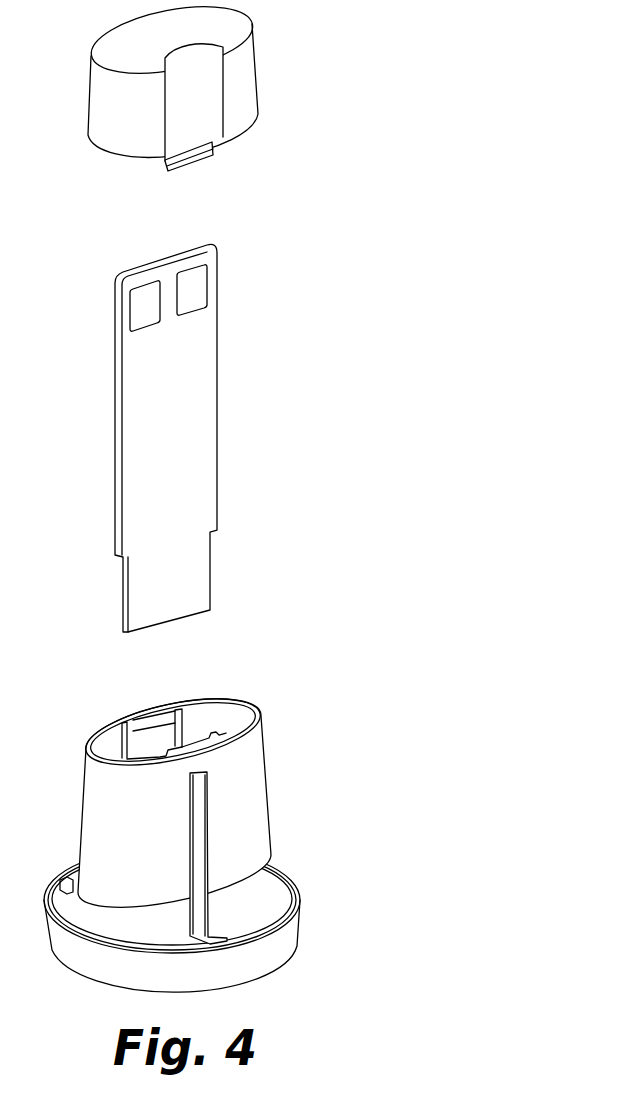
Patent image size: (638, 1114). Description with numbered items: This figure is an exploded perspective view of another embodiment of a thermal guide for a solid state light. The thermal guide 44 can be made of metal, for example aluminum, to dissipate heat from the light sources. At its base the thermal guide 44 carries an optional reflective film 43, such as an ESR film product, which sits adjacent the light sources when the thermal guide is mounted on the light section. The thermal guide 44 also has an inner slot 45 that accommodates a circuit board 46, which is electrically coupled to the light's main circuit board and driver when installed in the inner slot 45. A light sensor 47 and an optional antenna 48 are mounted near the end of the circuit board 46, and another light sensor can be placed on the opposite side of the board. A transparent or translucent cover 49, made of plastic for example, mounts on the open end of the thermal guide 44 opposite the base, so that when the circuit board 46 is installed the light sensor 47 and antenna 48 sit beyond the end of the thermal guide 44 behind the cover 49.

The reflective film 43 is at (283, 942).
The thermal guide 44 is at (250, 807).
The inner slot 45 is at (203, 713).
The circuit board 46 is at (203, 470).
The light sensor 47 is at (137, 307).
The antenna 48 is at (198, 287).
The cover 49 is at (243, 78).